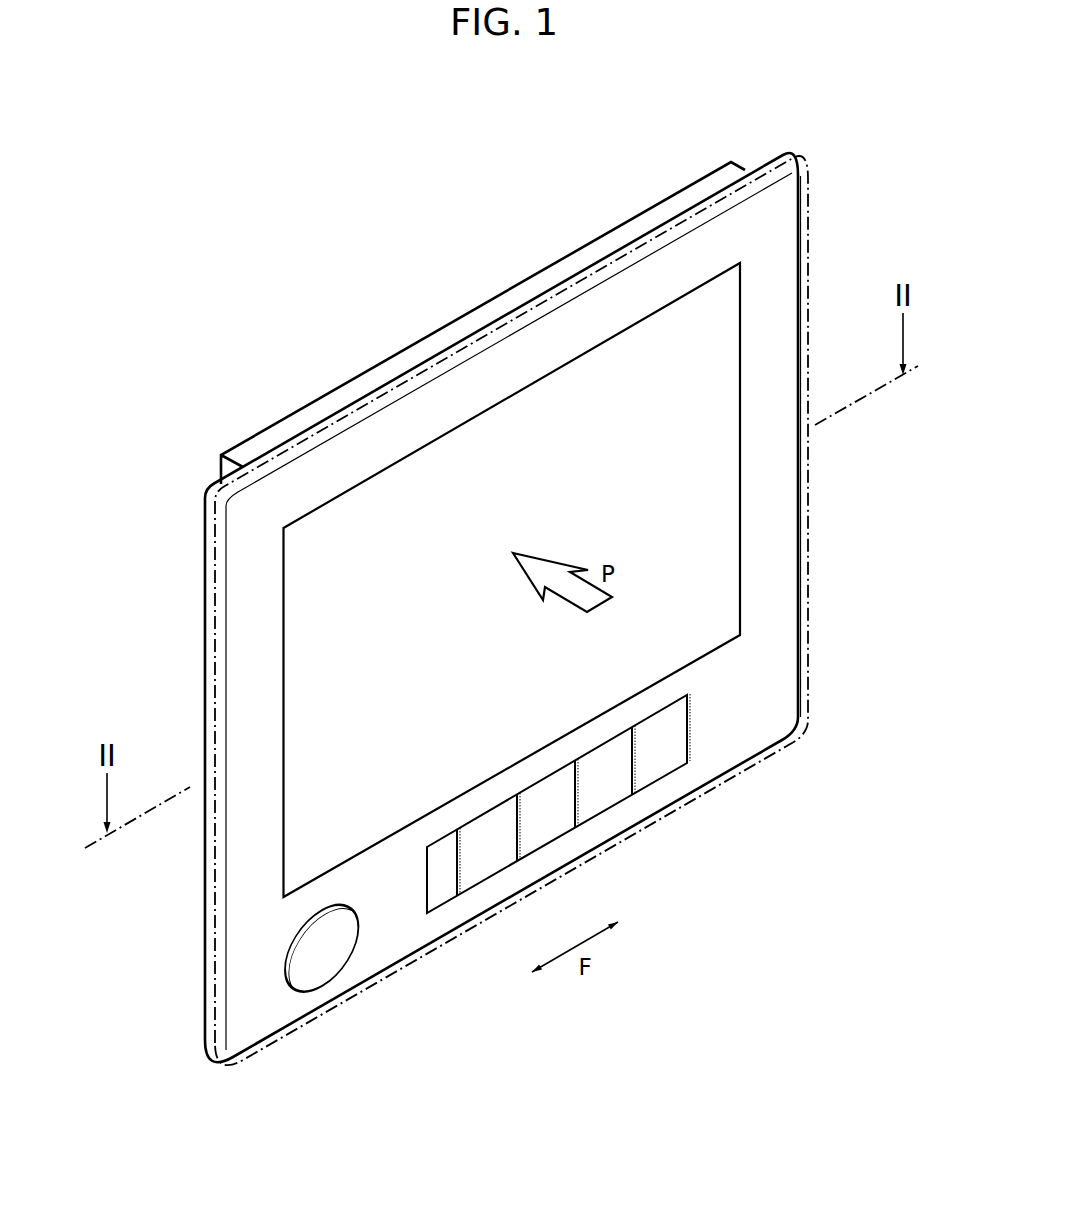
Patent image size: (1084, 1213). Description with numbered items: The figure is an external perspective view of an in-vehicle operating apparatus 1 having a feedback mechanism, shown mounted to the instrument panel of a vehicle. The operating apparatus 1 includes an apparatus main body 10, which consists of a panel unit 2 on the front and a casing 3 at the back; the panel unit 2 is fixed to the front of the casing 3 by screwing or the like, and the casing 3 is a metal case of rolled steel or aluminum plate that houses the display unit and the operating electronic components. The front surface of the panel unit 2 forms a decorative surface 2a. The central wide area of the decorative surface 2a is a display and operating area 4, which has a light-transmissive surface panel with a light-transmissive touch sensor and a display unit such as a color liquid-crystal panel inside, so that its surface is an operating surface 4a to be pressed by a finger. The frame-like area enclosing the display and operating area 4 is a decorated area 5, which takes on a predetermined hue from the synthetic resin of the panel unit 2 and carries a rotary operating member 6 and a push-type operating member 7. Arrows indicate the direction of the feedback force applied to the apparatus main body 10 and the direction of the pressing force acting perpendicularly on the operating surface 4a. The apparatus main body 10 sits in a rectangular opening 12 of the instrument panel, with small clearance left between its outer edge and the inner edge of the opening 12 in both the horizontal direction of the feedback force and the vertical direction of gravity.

The operating apparatus 1 is at (525, 580).
The panel unit 2 is at (578, 320).
The decorative surface 2a is at (245, 887).
The casing 3 is at (550, 146).
The display and operating area 4 is at (317, 590).
The operating surface 4a is at (453, 473).
The decorated area 5 is at (750, 732).
The rotary operating member 6 is at (338, 975).
The push-type operating member 7 is at (612, 812).
The apparatus main body 10 is at (501, 578).
The opening 12 is at (804, 491).